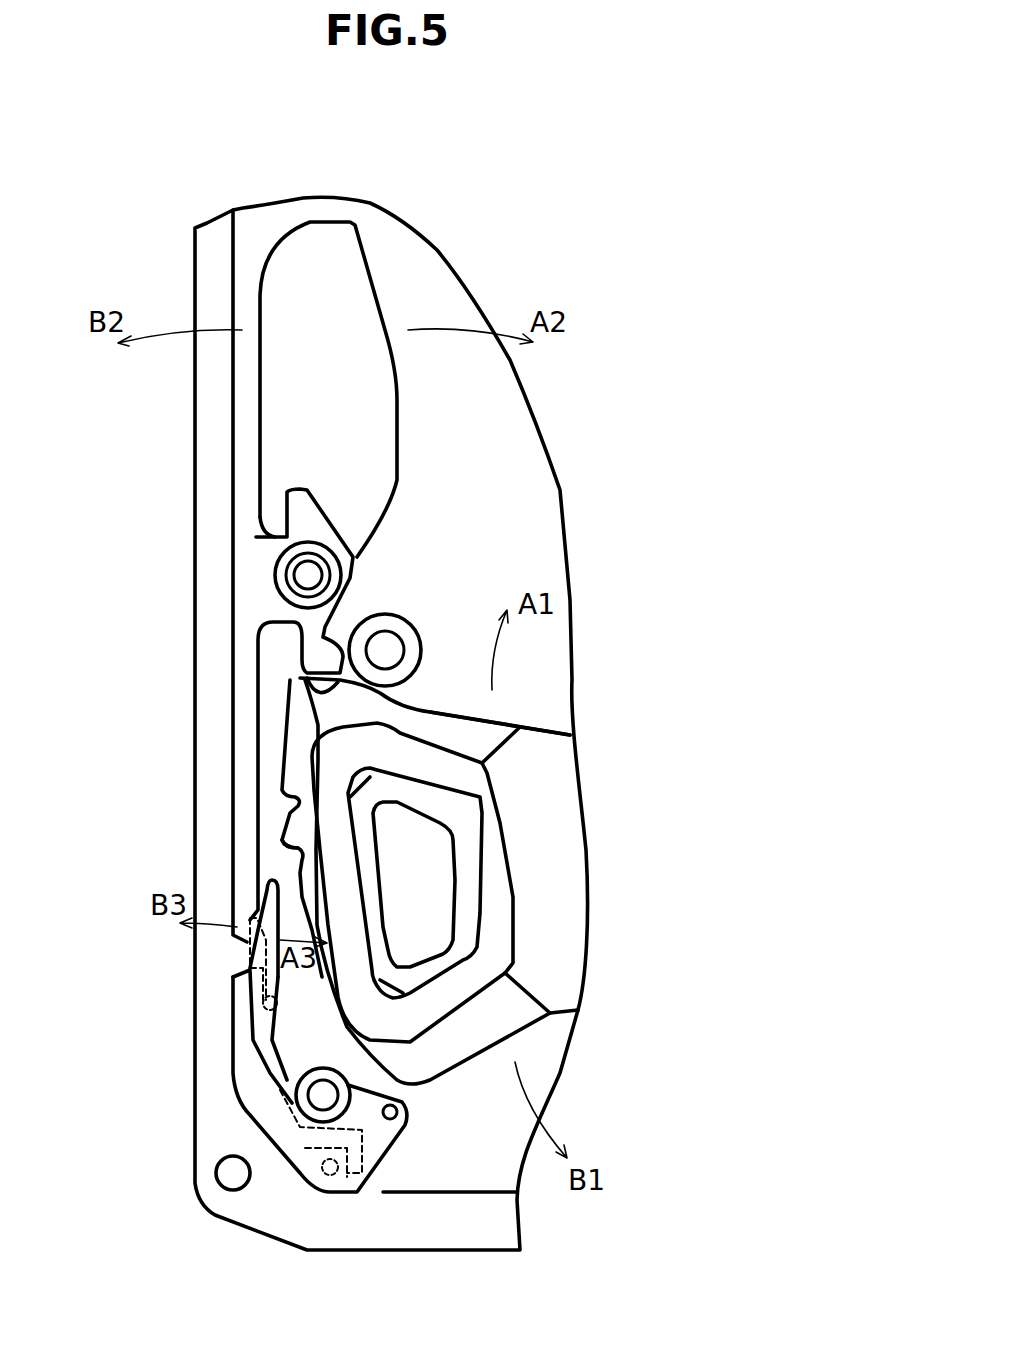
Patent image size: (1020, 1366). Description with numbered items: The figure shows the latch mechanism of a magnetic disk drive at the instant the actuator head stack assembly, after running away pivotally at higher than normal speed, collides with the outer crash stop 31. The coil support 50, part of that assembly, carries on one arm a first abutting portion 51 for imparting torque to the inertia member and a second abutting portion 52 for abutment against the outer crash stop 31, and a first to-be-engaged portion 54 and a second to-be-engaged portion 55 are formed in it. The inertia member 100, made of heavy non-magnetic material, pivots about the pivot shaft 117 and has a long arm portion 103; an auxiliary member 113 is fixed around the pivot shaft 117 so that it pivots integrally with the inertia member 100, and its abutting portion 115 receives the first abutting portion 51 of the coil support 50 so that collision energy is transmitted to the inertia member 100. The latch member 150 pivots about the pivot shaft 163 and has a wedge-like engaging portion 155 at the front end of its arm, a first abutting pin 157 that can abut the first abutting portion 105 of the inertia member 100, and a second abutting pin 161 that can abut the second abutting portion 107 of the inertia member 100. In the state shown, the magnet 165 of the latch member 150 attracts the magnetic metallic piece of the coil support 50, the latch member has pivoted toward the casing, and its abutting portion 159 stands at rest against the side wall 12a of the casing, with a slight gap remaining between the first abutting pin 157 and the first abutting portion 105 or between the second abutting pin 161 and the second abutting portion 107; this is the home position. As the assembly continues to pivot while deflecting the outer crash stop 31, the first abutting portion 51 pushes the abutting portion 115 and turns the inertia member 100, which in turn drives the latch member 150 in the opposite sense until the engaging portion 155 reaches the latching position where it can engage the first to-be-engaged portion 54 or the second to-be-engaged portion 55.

The inertia member 100 is at (376, 270).
The auxiliary member 113 is at (318, 522).
The pivot shaft 117 is at (312, 578).
The abutting portion 115 is at (300, 672).
The outer crash stop 31 is at (400, 601).
The first abutting portion 51 is at (300, 700).
The second to-be-engaged portion 55 is at (290, 795).
The first to-be-engaged portion 54 is at (290, 848).
The engaging portion 155 is at (282, 872).
The side wall 12a is at (233, 900).
The abutting portion 159 is at (252, 960).
The first abutting pin 157 is at (263, 1003).
The first abutting portion 105 is at (265, 1012).
The arm portion 103 is at (298, 1050).
The pivot shaft 163 is at (330, 1093).
The second abutting pin 161 is at (307, 1187).
The second abutting portion 107 is at (366, 1170).
The magnet 165 is at (404, 1143).
The latch member 150 is at (408, 1113).
The second abutting portion 52 is at (375, 682).
The coil support 50 is at (486, 735).